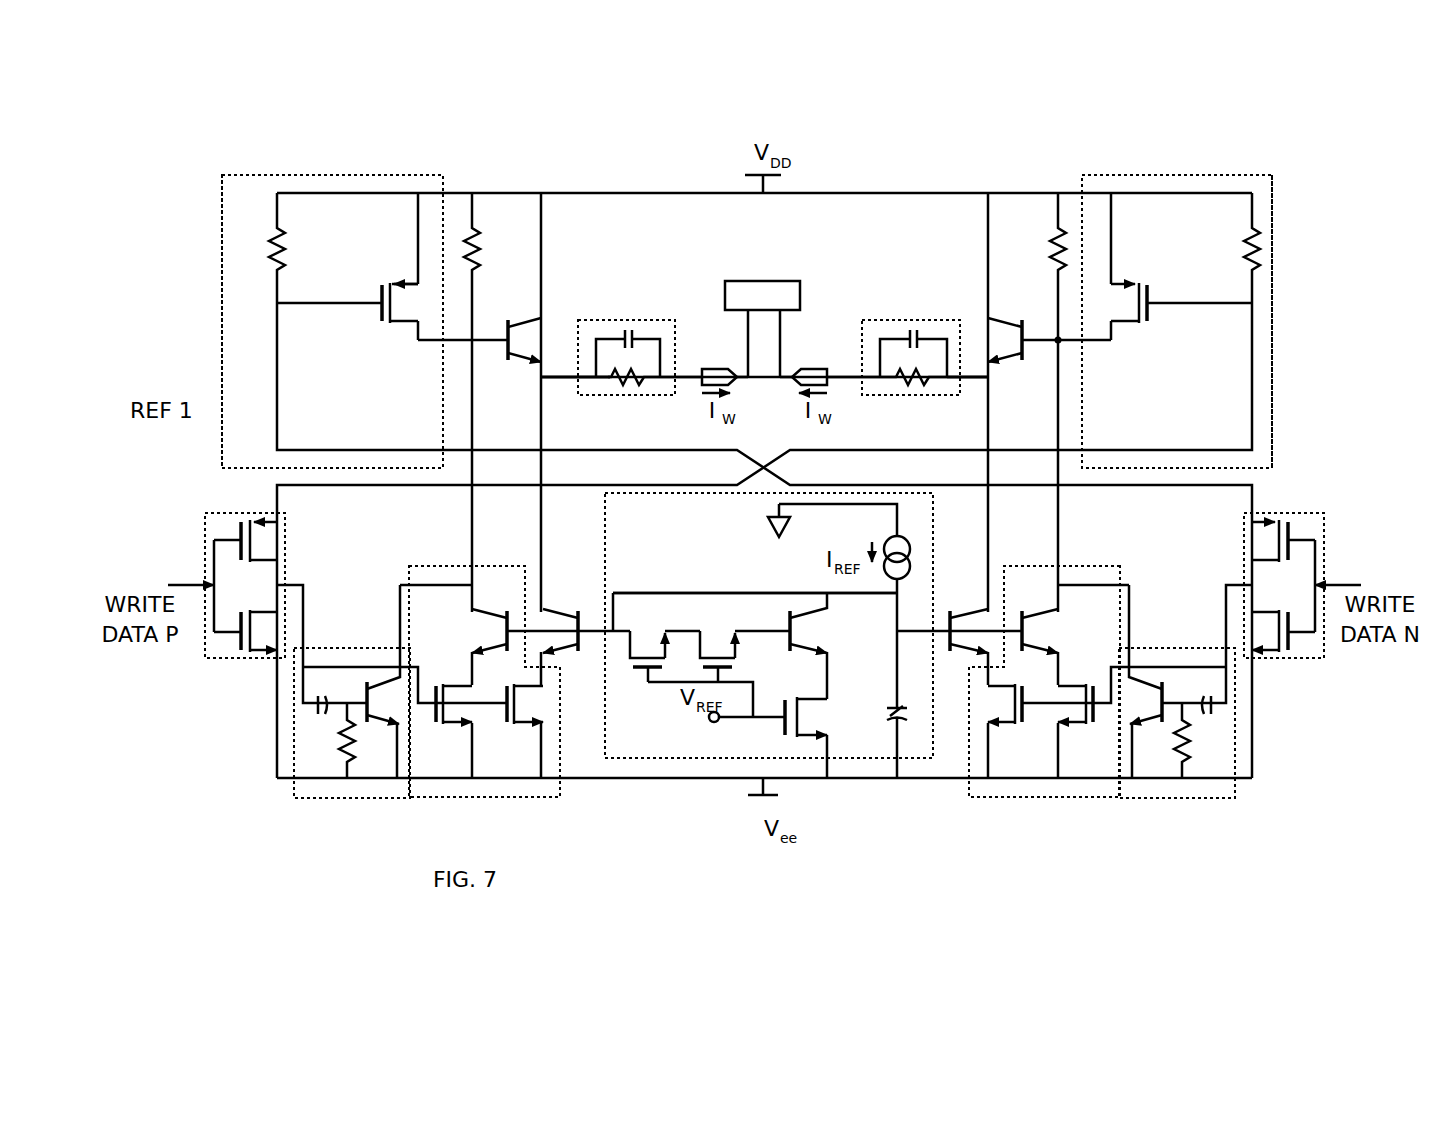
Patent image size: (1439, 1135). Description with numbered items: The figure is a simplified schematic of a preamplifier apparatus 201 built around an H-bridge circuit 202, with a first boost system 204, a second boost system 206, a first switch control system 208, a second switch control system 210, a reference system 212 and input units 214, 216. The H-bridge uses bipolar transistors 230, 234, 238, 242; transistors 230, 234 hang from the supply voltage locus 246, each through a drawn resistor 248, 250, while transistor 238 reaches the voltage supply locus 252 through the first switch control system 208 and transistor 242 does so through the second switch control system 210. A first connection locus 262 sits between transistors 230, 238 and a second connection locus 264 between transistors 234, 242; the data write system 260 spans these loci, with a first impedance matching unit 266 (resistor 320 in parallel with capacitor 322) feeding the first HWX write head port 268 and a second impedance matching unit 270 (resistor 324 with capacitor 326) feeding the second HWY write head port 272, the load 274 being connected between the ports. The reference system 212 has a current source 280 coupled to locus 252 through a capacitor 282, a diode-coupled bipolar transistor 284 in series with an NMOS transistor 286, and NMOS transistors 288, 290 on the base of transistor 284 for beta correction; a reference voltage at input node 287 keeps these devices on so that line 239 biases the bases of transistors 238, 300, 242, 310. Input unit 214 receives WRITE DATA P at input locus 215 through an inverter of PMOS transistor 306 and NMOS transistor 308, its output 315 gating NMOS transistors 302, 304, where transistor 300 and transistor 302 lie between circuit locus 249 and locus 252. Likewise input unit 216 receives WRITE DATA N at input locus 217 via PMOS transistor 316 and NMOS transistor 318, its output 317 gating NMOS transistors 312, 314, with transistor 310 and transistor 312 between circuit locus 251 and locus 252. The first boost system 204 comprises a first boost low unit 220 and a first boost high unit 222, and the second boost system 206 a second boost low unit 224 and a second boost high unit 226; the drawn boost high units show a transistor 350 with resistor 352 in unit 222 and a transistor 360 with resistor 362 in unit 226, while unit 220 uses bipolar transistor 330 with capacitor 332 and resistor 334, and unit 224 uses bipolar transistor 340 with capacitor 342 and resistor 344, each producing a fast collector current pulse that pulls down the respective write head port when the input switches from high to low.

The preamplifier apparatus 201 is at (1302, 836).
The H-bridge circuit 202 is at (949, 146).
The first boost system 204 is at (1308, 290).
The second boost system 206 is at (196, 306).
The first switch control system 208 is at (480, 800).
The second switch control system 210 is at (1005, 800).
The reference system 212 is at (604, 548).
The input unit 214 is at (290, 550).
The input locus 215 is at (210, 582).
The input unit 216 is at (1244, 550).
The input locus 217 is at (1318, 585).
The first boost low unit 220 is at (355, 800).
The first boost high unit 222 is at (1275, 330).
The second boost low unit 224 is at (1165, 800).
The second boost high unit 226 is at (222, 318).
The bipolar transistor 230 is at (508, 322).
The bipolar transistor 234 is at (1022, 322).
The bipolar transistor 238 is at (578, 619).
The line 239 is at (735, 592).
The bipolar transistor 242 is at (950, 619).
The supply voltage locus 246 is at (790, 173).
The resistor 248 is at (480, 248).
The circuit locus 249 is at (472, 343).
The resistor 250 is at (1052, 250).
The circuit locus 251 is at (1056, 343).
The voltage supply locus 252 is at (751, 794).
The data write system 260 is at (681, 250).
The first connection locus 262 is at (541, 380).
The second connection locus 264 is at (992, 379).
The first impedance matching unit 266 is at (630, 318).
The first HWX write head port 268 is at (712, 368).
The second impedance matching unit 270 is at (924, 318).
The second HWY write head port 272 is at (814, 368).
The load 274 is at (778, 281).
The current source 280 is at (889, 541).
The capacitor 282 is at (890, 708).
The bipolar transistor 284 is at (790, 620).
The NMOS transistor 286 is at (783, 732).
The input node 287 is at (710, 722).
The NMOS transistor 288 is at (636, 673).
The NMOS transistor 290 is at (734, 668).
The bipolar transistor 300 is at (507, 619).
The NMOS transistor 302 is at (442, 724).
The NMOS transistor 304 is at (513, 724).
The PMOS transistor 306 is at (240, 530).
The NMOS transistor 308 is at (243, 662).
The bipolar transistor 310 is at (1022, 619).
The NMOS transistor 312 is at (1088, 724).
The NMOS transistor 314 is at (1020, 724).
The output 315 is at (290, 585).
The PMOS transistor 316 is at (1289, 530).
The output 317 is at (1246, 585).
The NMOS transistor 318 is at (1288, 662).
The resistor 320 is at (645, 387).
The capacitor 322 is at (634, 337).
The resistor 324 is at (896, 387).
The capacitor 326 is at (912, 337).
The bipolar transistor 330 is at (368, 683).
The capacitor 332 is at (320, 697).
The resistor 334 is at (352, 736).
The bipolar transistor 340 is at (1162, 685).
The capacitor 342 is at (1209, 697).
The resistor 344 is at (1177, 736).
The transistor 350 is at (1150, 318).
The resistor 352 is at (1240, 252).
The transistor 360 is at (376, 316).
The resistor 362 is at (290, 248).